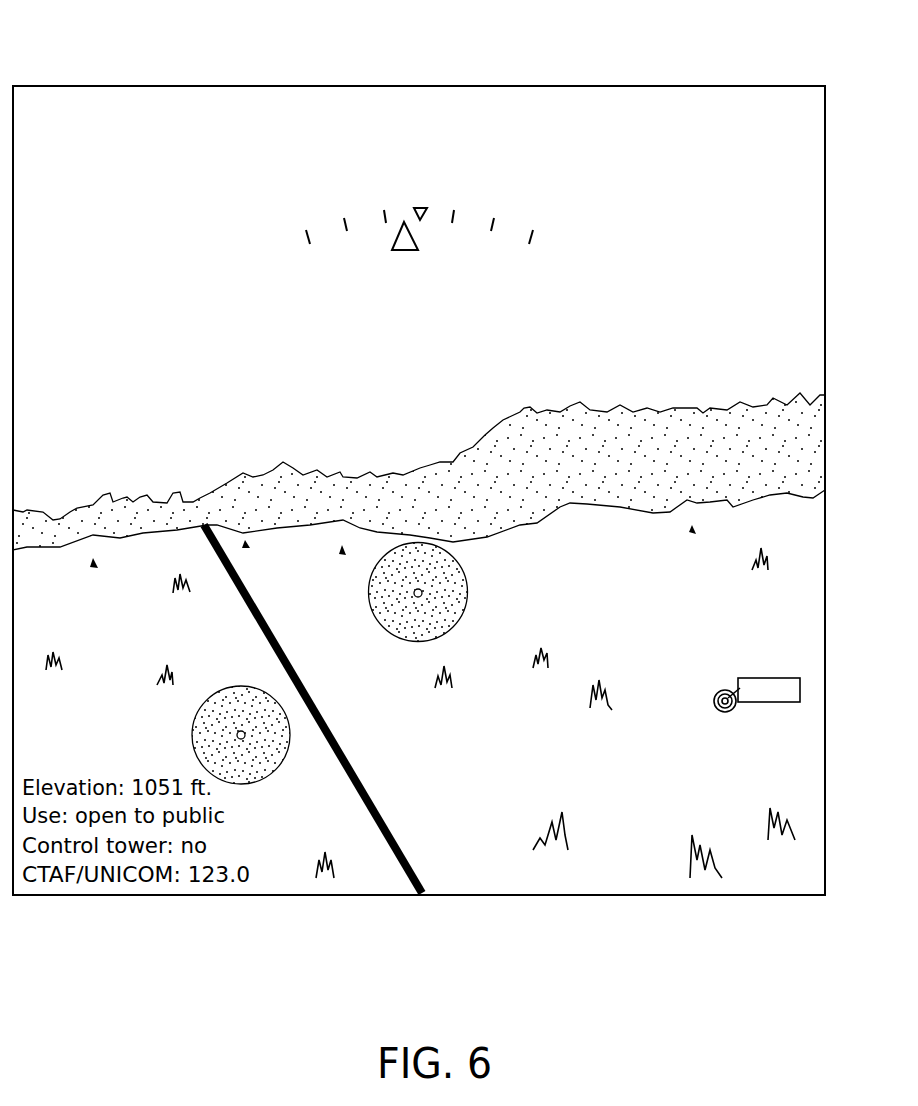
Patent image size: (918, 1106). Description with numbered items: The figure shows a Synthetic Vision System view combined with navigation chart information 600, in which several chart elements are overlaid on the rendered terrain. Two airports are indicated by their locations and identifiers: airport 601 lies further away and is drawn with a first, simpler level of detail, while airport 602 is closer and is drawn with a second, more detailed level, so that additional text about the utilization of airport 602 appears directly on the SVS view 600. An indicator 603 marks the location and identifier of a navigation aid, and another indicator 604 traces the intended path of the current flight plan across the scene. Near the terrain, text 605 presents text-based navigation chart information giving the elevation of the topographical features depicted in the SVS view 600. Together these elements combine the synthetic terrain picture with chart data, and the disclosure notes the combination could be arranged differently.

The SVS view combined with navigation chart information 600 is at (226, 44).
The airport 601 is at (420, 642).
The airport 602 is at (243, 785).
The indicator 603 is at (722, 692).
The indicator 604 is at (390, 832).
The text 605 is at (517, 375).